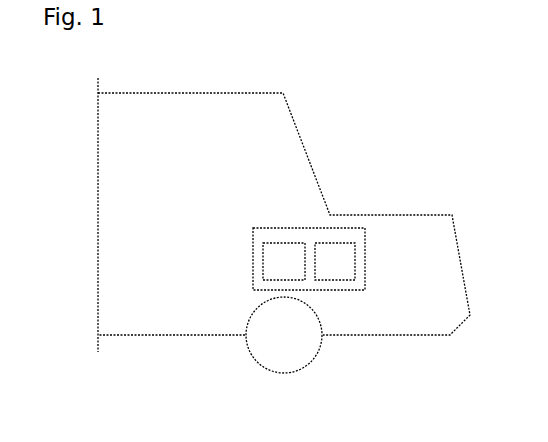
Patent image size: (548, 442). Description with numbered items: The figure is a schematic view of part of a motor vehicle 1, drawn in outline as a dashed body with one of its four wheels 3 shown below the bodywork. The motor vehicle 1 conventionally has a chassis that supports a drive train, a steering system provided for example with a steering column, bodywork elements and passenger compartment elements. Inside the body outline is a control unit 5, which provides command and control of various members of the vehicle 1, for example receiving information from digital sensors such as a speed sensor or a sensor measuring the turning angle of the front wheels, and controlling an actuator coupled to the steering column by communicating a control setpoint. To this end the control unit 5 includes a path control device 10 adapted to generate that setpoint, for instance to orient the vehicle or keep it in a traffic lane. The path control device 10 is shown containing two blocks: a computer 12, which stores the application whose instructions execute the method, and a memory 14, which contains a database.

The motor vehicle 1 is at (424, 216).
The wheels 3 is at (320, 356).
The control unit 5 is at (268, 228).
The path control device 10 is at (342, 244).
The computer 12 is at (298, 270).
The memory 14 is at (348, 270).